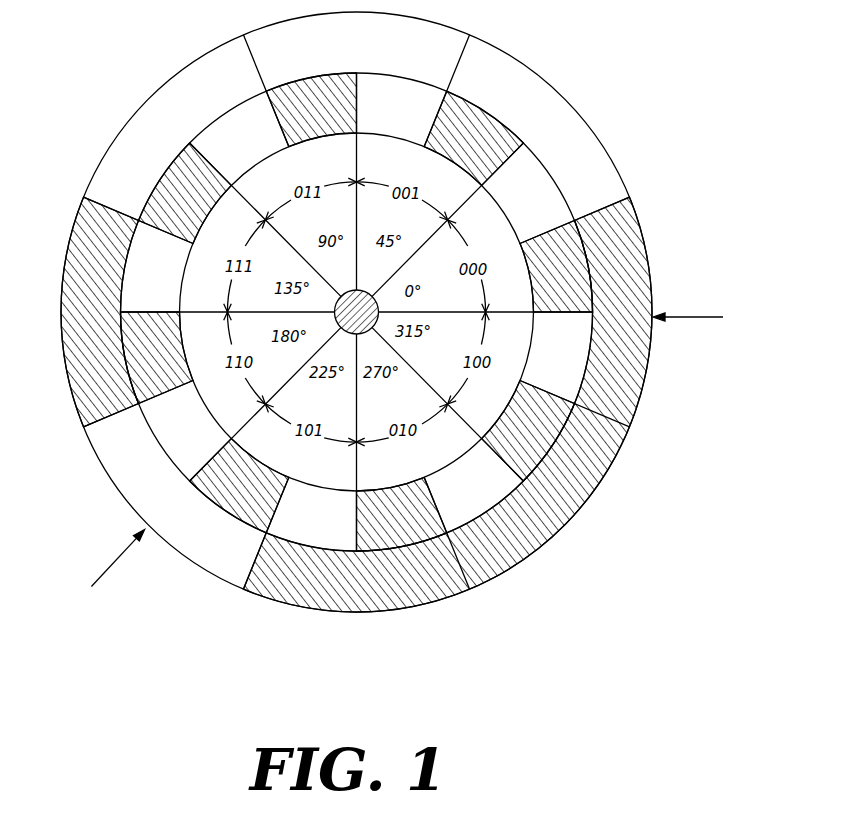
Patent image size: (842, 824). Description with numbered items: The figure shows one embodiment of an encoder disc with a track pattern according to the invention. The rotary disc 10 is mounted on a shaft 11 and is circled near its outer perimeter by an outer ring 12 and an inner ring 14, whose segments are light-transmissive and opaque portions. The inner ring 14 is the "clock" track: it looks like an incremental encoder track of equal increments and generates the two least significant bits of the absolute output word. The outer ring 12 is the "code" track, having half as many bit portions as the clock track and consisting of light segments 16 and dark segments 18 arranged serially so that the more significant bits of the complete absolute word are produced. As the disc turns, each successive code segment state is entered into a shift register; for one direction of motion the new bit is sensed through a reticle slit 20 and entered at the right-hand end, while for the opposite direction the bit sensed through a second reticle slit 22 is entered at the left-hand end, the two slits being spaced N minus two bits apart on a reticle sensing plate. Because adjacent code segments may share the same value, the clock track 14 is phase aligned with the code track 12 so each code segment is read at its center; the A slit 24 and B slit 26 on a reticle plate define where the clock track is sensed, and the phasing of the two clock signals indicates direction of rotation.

The rotary disc 10 is at (113, 127).
The shaft 11 is at (363, 290).
The outer ring (code track) 12 is at (122, 428).
The inner ring (clock track) 14 is at (187, 422).
The light segments 16 is at (223, 550).
The dark segments 18 is at (87, 397).
The reticle slit 20 is at (723, 311).
The second reticle slit 22 is at (68, 607).
The A slit 24 is at (470, 597).
The B slit 26 is at (413, 610).